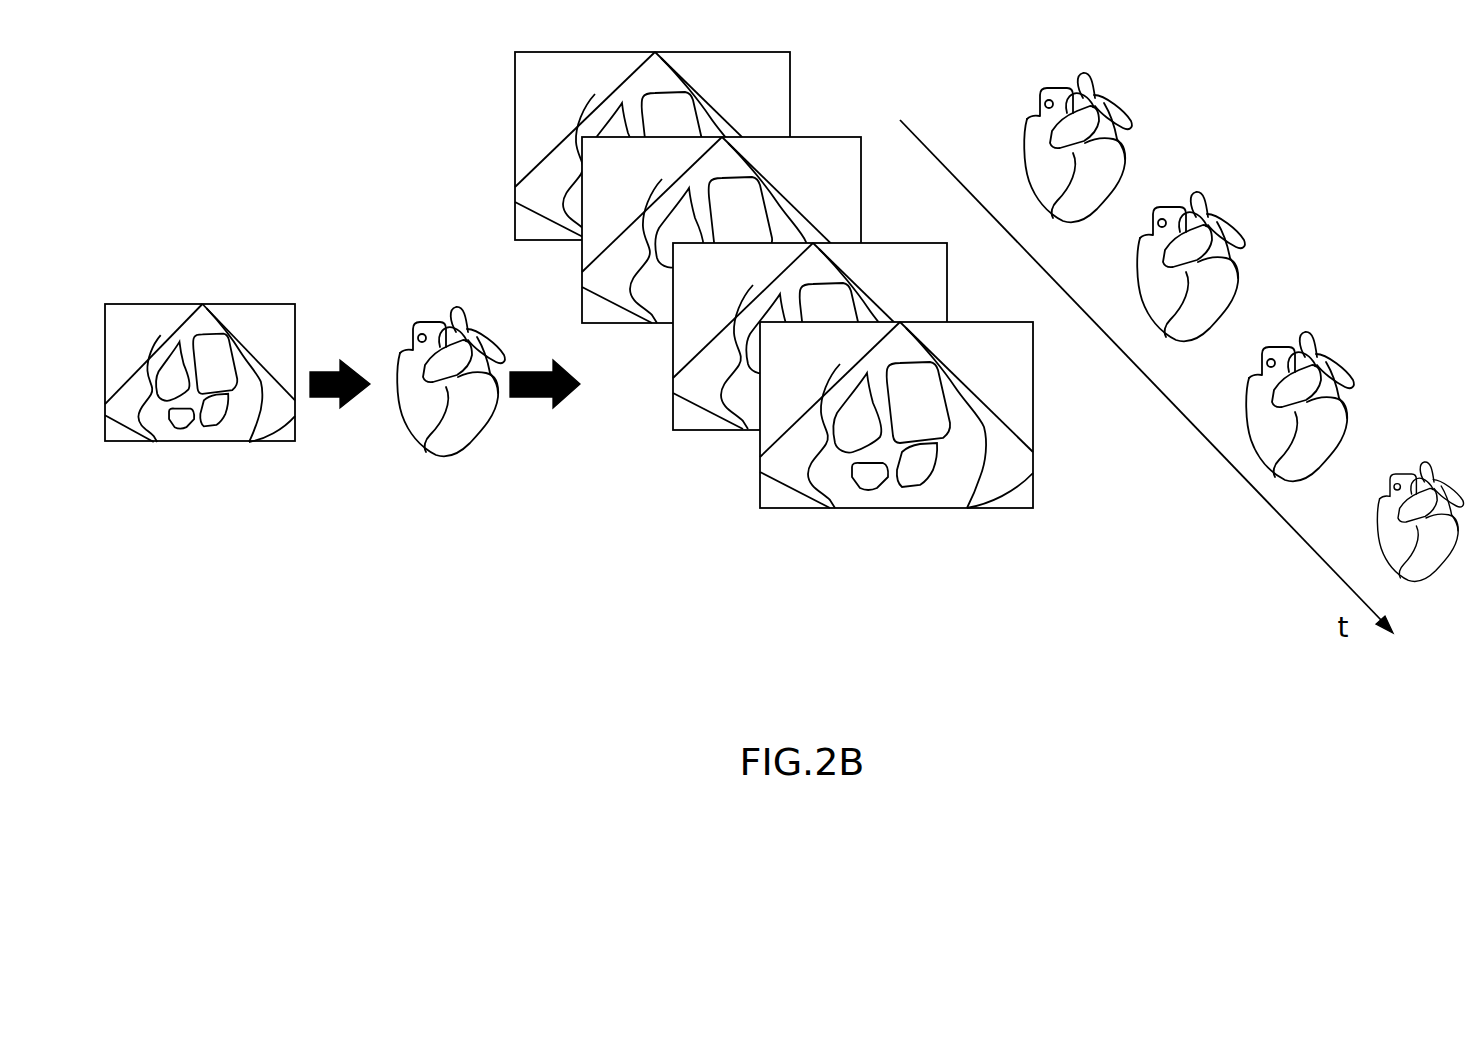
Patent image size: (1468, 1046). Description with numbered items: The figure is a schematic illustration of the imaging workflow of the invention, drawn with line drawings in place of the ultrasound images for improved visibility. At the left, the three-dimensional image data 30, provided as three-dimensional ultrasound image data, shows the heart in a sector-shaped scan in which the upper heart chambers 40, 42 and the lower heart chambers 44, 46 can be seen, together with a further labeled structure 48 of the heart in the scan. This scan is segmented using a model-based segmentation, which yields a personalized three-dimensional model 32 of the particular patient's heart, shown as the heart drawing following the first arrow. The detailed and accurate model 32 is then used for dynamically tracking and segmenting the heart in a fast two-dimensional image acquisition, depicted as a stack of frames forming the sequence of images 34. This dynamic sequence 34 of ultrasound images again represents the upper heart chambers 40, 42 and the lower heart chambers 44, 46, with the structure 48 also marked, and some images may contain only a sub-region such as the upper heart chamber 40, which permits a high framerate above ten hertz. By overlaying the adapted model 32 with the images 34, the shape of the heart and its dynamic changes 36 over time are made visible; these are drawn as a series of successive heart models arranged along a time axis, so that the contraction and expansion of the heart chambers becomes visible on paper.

The 3D image data 30 is at (200, 447).
The 3D model 32 is at (405, 442).
The sequence of images 34 is at (713, 468).
The dynamic changes 36 is at (1274, 282).
The upper heart chamber 40 is at (937, 385).
The upper heart chamber 42 is at (848, 432).
The lower heart chamber 44 is at (910, 482).
The lower heart chamber 46 is at (870, 482).
The myocardium 48 is at (983, 423).